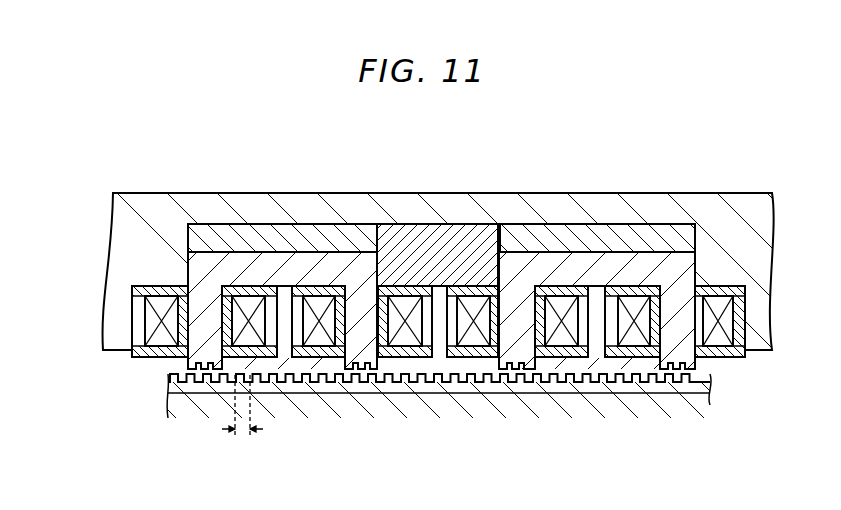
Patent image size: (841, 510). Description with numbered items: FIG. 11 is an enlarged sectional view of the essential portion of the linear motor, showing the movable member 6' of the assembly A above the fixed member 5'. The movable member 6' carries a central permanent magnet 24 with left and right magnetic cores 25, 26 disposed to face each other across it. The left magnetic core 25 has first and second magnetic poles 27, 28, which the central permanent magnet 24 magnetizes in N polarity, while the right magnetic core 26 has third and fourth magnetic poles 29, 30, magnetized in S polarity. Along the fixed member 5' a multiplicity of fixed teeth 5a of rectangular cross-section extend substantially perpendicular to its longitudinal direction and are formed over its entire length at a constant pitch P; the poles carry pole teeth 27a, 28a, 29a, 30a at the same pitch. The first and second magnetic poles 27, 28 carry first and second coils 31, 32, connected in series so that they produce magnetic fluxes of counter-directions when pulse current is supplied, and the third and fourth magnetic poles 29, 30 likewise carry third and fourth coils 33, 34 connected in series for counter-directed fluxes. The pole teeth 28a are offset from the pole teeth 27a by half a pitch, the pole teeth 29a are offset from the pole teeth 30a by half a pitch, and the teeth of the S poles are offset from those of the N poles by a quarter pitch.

The linear pulse motor assembly A is at (145, 192).
The movable member 6' is at (438, 243).
The magnetic core 25 is at (282, 252).
The second coil 32 is at (405, 297).
The central permanent magnet 24 is at (442, 230).
The third coil 33 is at (470, 293).
The magnetic core 26 is at (627, 256).
The first coil 31 is at (103, 312).
The fourth coil 34 is at (727, 320).
The first magnetic pole 27 is at (188, 362).
The pole teeth 27a is at (203, 368).
The second magnetic pole 28 is at (372, 360).
The pole teeth 28a is at (357, 370).
The third magnetic pole 29 is at (503, 362).
The pole teeth 29a is at (520, 372).
The fourth magnetic pole 30 is at (697, 362).
The pole teeth 30a is at (677, 370).
The fixed member 5' is at (418, 399).
The fixed teeth 5a is at (628, 375).
The pitch P is at (251, 412).